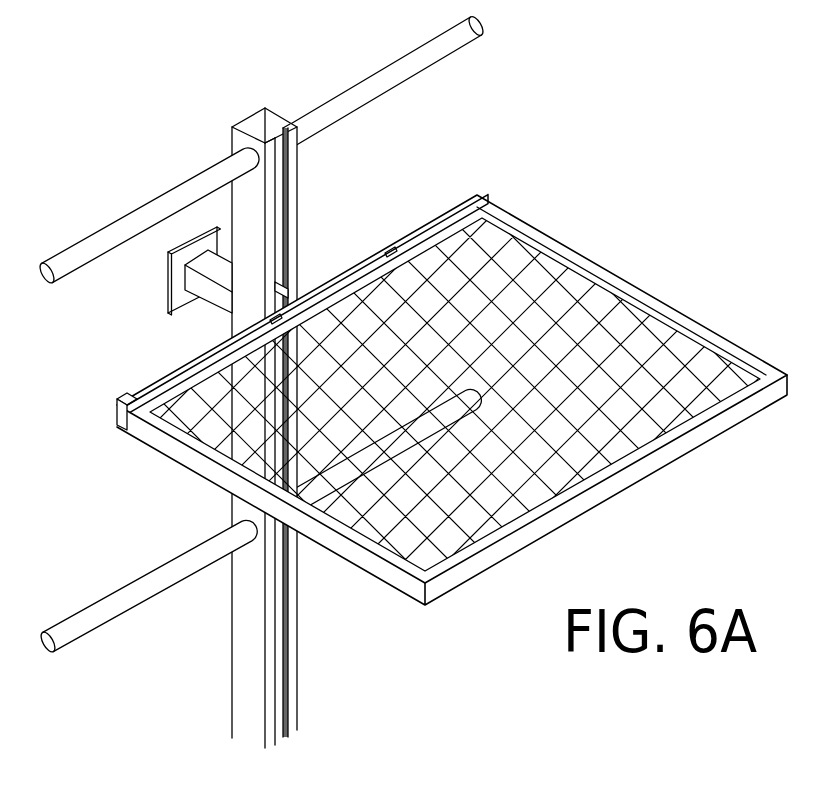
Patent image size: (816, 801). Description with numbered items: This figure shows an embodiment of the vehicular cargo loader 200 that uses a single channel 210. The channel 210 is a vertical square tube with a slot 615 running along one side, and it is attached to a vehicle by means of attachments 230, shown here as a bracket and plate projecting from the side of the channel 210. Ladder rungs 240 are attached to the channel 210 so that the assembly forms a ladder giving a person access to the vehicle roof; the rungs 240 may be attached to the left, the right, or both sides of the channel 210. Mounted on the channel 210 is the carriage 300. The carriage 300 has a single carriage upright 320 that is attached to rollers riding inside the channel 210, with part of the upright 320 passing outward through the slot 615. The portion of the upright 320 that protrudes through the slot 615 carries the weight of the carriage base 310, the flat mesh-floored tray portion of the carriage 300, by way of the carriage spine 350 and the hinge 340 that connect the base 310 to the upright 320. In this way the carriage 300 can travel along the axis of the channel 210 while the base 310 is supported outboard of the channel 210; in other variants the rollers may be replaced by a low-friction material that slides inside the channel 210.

The loader 200 is at (123, 101).
The channel 210 is at (290, 204).
The attachment 230 is at (176, 285).
The ladder rung 240 is at (110, 613).
The carriage 300 is at (521, 202).
The carriage base 310 is at (683, 447).
The carriage upright 320 is at (287, 295).
The hinge 340 is at (153, 390).
The carriage spine 350 is at (118, 420).
The slot 615 is at (278, 144).